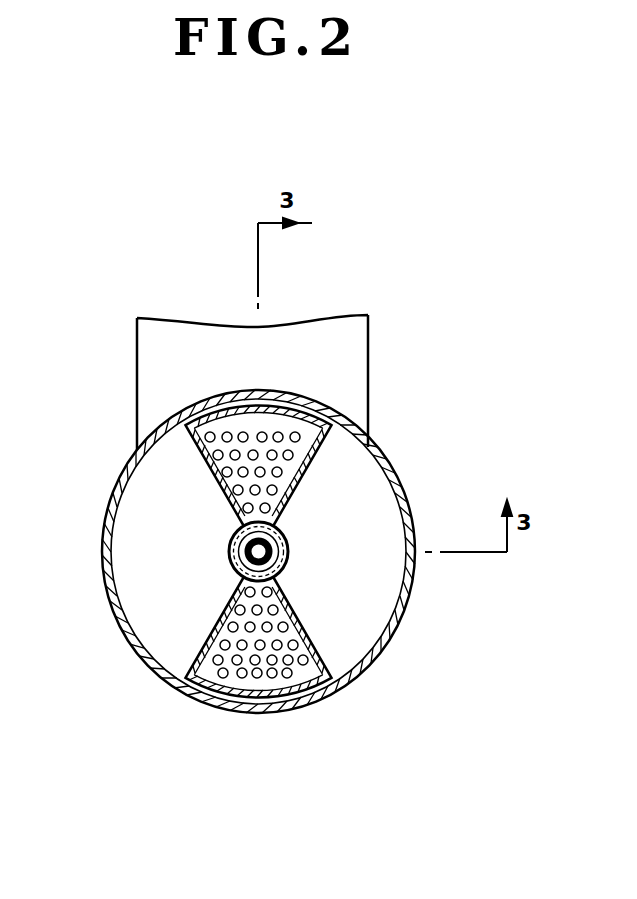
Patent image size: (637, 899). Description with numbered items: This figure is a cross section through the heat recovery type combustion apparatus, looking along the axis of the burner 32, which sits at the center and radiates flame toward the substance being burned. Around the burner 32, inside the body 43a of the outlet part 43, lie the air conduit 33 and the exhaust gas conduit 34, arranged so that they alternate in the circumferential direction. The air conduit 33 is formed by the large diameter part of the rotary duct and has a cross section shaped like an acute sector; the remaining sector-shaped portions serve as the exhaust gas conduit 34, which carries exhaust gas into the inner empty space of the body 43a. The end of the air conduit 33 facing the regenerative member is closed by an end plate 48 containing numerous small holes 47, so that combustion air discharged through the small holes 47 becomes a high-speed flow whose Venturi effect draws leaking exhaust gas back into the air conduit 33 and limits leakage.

The burner 32 is at (258, 552).
The air conduit 33 is at (303, 570).
The exhaust gas conduit 34 is at (137, 582).
The outlet part 43 is at (362, 348).
The body of the outlet part 43a is at (118, 473).
The small holes 47 is at (215, 488).
The end plate 48 is at (202, 452).